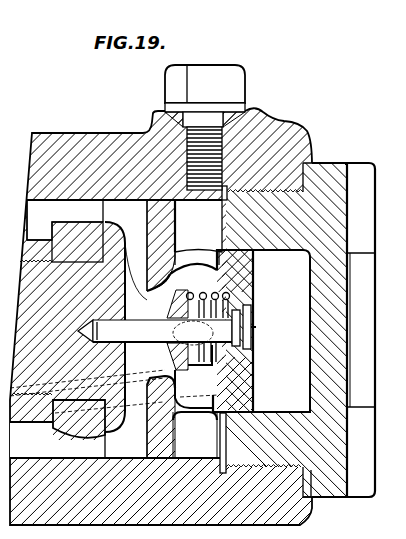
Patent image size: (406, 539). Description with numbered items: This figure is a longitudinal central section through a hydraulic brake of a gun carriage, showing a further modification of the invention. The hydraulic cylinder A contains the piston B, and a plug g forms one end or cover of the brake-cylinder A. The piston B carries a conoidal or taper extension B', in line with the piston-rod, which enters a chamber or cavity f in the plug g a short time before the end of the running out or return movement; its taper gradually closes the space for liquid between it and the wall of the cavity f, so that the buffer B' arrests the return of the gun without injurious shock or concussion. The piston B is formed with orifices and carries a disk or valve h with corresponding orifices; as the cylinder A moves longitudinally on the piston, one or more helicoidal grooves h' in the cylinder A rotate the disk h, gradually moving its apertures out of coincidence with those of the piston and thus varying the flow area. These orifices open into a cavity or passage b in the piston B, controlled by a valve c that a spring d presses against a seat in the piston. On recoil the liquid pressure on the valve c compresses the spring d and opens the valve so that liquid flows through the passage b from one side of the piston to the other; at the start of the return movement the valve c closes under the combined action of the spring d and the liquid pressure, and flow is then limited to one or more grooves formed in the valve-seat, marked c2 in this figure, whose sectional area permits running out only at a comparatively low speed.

The hydraulic cylinder A is at (203, 269).
The plug g is at (203, 269).
The chamber or cavity f is at (281, 331).
The piston B is at (203, 269).
The cavity or passage b is at (125, 329).
The helicoidal grooves h' is at (42, 220).
The disk or valve h is at (203, 269).
The conoidal or taper extension B' is at (203, 269).
The spring d is at (203, 269).
The valve c is at (162, 354).
The stem guide passage c2 is at (140, 276).